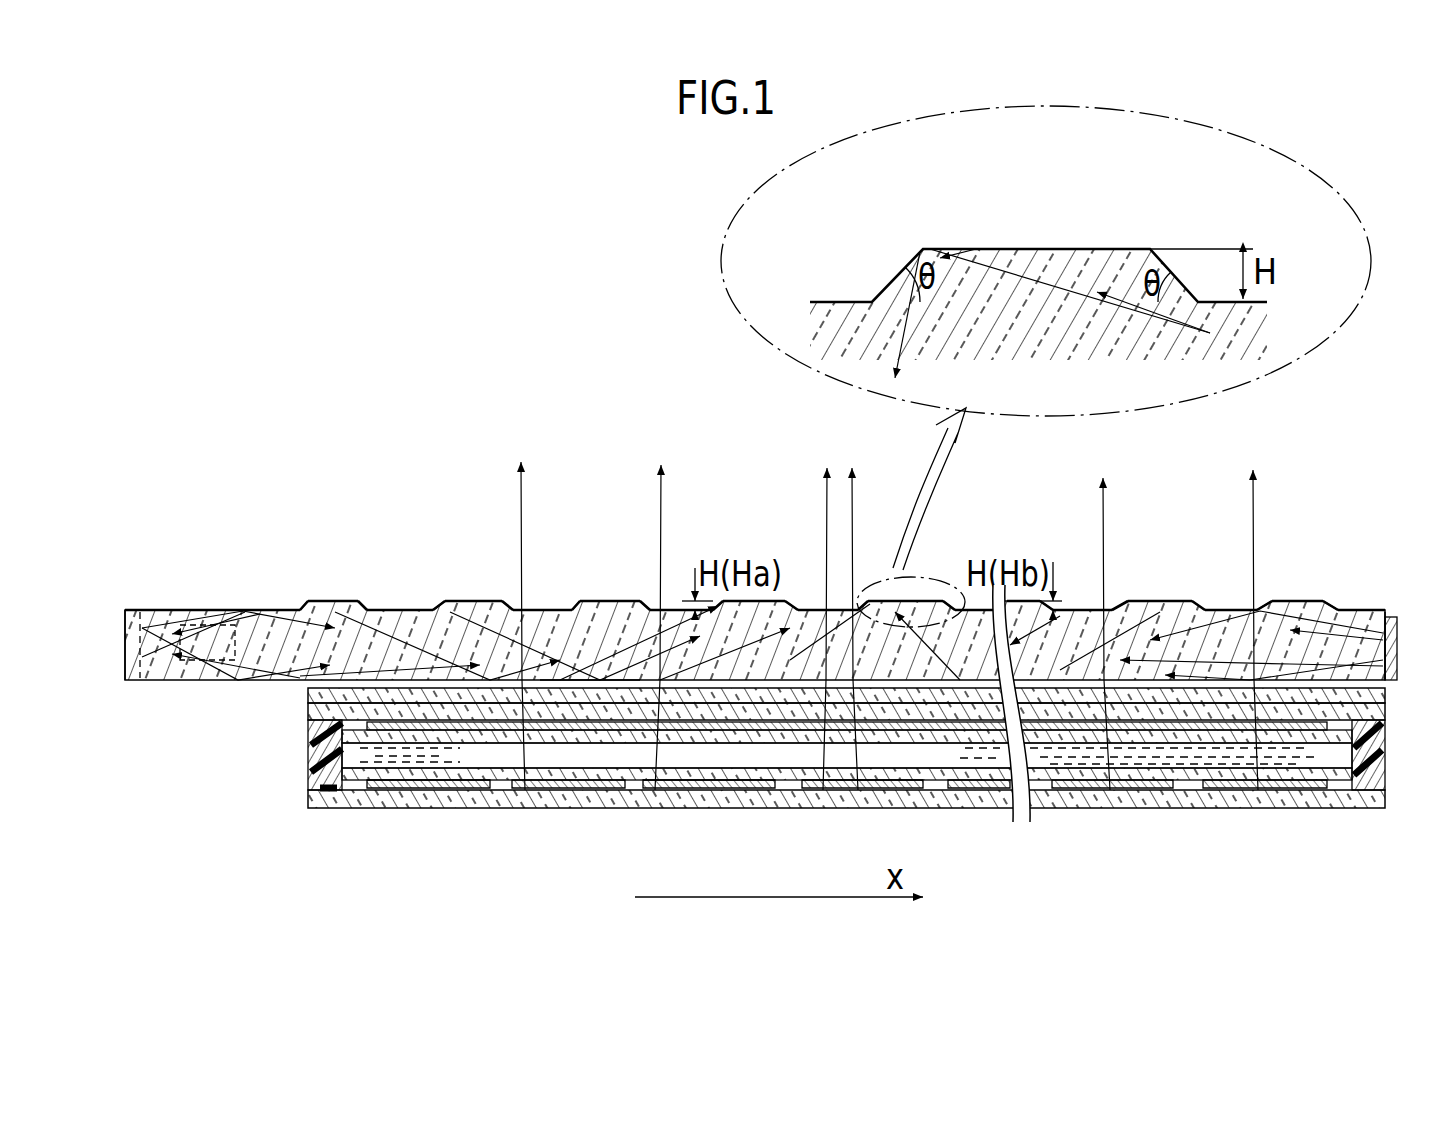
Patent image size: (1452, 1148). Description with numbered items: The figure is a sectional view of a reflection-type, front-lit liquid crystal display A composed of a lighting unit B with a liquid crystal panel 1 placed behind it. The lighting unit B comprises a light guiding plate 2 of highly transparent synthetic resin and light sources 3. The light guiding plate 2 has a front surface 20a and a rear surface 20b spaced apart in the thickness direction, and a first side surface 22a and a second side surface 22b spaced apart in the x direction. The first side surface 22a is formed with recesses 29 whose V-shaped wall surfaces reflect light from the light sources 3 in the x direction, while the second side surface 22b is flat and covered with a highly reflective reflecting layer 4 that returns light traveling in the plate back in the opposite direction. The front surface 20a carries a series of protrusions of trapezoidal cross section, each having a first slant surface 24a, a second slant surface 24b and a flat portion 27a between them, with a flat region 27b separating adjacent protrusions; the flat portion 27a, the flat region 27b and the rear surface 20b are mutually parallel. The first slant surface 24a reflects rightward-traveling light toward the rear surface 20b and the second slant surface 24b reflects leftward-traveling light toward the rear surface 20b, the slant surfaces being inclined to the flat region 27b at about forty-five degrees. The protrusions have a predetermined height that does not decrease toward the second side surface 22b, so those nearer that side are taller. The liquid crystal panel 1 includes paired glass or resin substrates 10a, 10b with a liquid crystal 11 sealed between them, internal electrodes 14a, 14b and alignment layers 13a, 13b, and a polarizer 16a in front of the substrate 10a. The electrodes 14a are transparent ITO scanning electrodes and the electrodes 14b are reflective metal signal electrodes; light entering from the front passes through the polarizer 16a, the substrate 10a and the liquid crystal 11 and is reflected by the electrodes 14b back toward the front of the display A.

The liquid crystal panel 1 is at (776, 778).
The light guiding plate 2 is at (282, 605).
The light source 3 is at (215, 610).
The reflecting layer 4 is at (1392, 614).
The substrate 10a is at (308, 716).
The substrate 10b is at (312, 797).
The liquid crystal 11 is at (343, 757).
The alignment layer 13a is at (343, 732).
The alignment layer 13b is at (343, 784).
The electrode 14a is at (795, 790).
The electrode 14b is at (433, 790).
The polarizer 16a is at (308, 694).
The front surface 20a is at (543, 610).
The rear surface 20b is at (582, 679).
The first side surface 22a is at (124, 620).
The second side surface 22b is at (1398, 643).
The first slant surface 24a is at (508, 606).
The second slant surface 24b is at (437, 605).
The flat portion 27a is at (335, 601).
The flat region 27b is at (401, 610).
The recess 29 is at (117, 660).
The liquid crystal display A is at (422, 460).
The lighting unit B is at (192, 510).